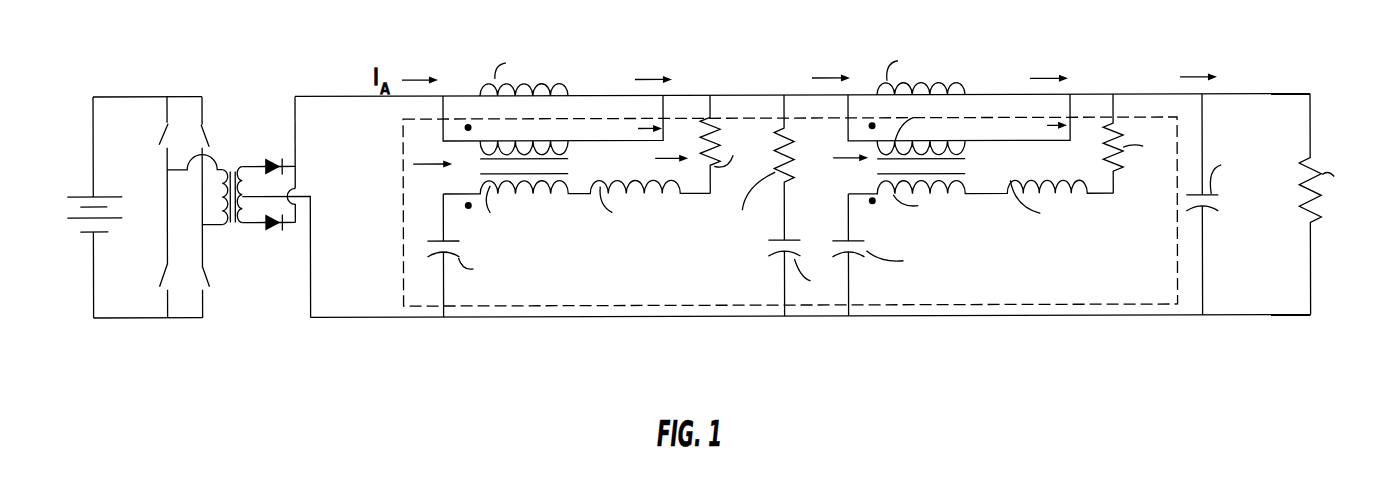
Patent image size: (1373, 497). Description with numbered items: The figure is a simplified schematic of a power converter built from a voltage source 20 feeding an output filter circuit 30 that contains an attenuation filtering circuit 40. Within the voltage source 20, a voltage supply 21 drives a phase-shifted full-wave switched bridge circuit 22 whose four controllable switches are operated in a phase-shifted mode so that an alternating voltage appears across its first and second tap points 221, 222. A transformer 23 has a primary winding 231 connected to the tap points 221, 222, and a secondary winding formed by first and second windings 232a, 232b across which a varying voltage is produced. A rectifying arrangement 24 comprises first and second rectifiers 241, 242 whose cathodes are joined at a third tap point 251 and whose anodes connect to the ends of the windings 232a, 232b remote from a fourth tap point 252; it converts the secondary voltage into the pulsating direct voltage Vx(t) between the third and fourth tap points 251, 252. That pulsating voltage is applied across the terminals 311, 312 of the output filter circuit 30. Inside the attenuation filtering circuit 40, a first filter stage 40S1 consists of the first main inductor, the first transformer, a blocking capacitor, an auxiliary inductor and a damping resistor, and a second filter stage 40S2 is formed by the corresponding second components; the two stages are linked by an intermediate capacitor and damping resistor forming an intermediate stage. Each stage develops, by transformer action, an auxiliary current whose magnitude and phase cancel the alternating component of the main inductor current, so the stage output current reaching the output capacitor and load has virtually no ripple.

The voltage source 20 is at (228, 80).
The voltage supply 21 is at (92, 240).
The phase-shifted full-wave switched bridge circuit 22 is at (181, 319).
The first tap point 221 is at (220, 173).
The second tap point 222 is at (212, 230).
The transformer 23 is at (236, 222).
The primary winding 231 is at (221, 196).
The first winding 232a is at (259, 165).
The second winding 232b is at (233, 222).
The rectifying arrangement 24 is at (303, 203).
The first rectifier 241 is at (271, 160).
The second rectifier 242 is at (272, 232).
The third tap point 251 is at (297, 166).
The fourth tap point 252 is at (243, 196).
The output filter circuit 30 is at (1237, 90).
The first terminal 311 is at (295, 97).
The second terminal 312 is at (310, 318).
The attenuation filtering circuit 40 is at (1184, 144).
The first filter stage 40S1 is at (658, 247).
The second filter stage 40S2 is at (1067, 247).